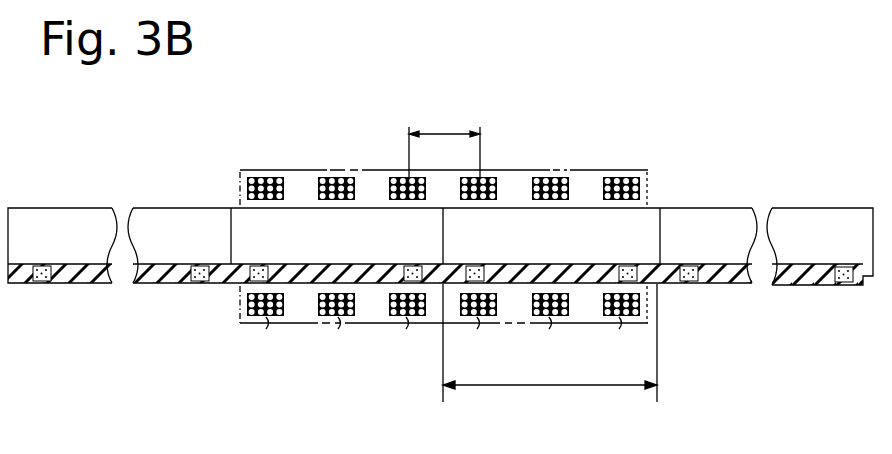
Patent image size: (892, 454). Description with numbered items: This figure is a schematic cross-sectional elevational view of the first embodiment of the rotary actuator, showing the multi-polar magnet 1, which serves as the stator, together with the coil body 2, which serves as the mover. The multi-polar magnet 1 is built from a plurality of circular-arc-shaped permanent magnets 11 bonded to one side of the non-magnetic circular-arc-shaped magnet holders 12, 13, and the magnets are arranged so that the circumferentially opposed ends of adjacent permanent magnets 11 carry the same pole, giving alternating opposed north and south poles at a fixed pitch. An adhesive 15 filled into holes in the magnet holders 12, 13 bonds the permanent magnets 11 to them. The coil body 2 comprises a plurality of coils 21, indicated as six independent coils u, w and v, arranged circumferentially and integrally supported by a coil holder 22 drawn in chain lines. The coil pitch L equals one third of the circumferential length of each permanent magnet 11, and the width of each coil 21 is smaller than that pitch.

The multi-polar magnet 1 is at (768, 210).
The coil body 2 is at (630, 172).
The permanent magnet 11 is at (650, 215).
The circular-arc-shaped magnet holder 12 is at (81, 283).
The circular-arc-shaped magnet holder 13 is at (794, 285).
The adhesive 15 is at (197, 283).
The coil 21 is at (490, 177).
The coil holder 22 is at (262, 170).